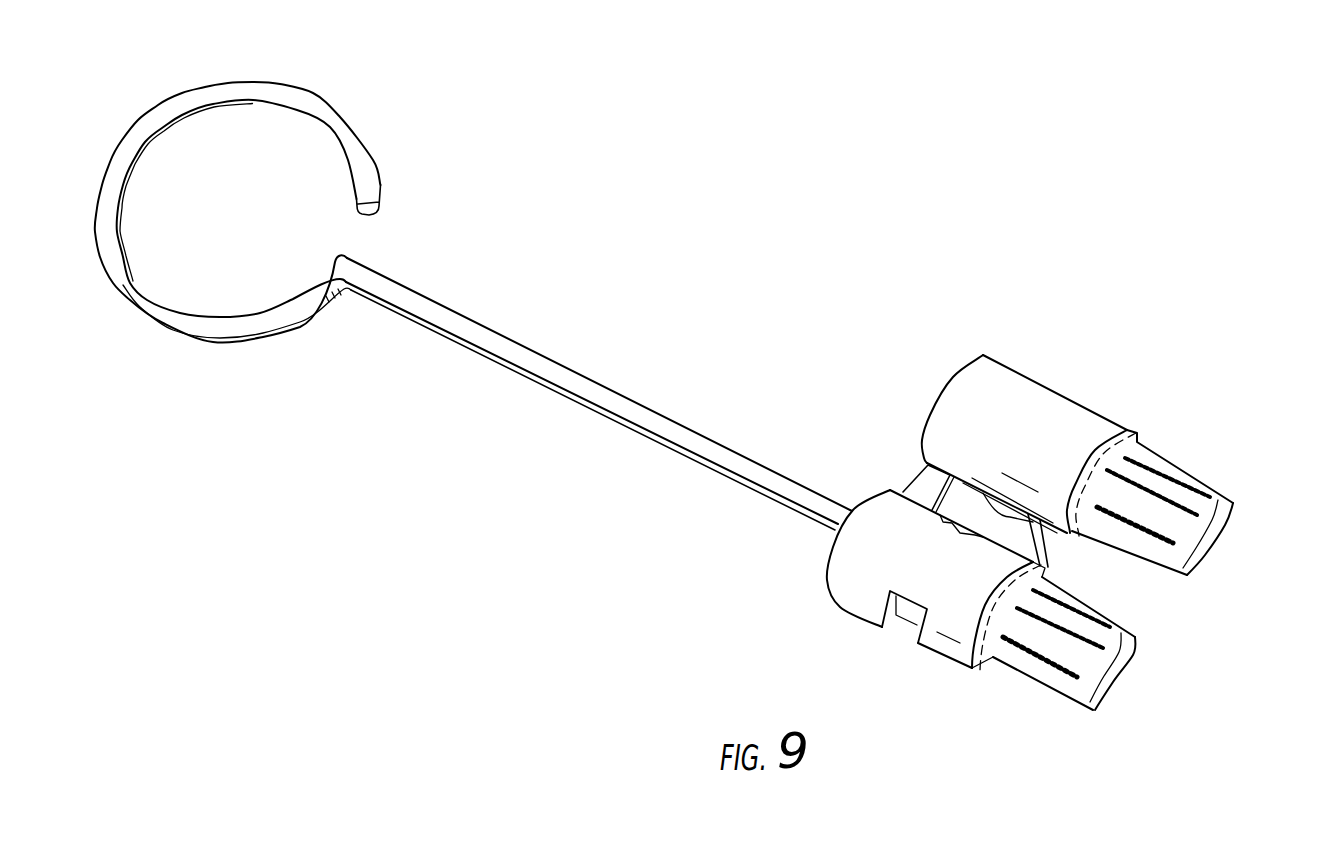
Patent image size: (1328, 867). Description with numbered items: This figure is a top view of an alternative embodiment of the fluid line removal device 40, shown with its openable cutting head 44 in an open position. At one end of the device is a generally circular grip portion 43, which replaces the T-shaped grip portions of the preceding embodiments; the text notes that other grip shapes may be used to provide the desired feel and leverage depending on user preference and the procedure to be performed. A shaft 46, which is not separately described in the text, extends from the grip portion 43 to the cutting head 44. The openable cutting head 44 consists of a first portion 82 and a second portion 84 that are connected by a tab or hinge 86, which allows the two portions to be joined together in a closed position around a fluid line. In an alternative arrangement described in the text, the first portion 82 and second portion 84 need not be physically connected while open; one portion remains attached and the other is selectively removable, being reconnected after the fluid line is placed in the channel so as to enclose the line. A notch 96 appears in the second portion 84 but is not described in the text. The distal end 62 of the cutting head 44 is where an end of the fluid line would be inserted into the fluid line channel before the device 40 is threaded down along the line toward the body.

The fluid line removal device 40 is at (803, 108).
The generally circular grip portion 43 is at (360, 145).
The shaft 46 is at (497, 330).
The openable cutting head 44 is at (1130, 375).
The first portion 82 is at (1002, 360).
The tab or hinge 86 is at (920, 483).
The second portion 84 is at (865, 500).
The notch 96 is at (902, 623).
The distal end 62 is at (1217, 497).